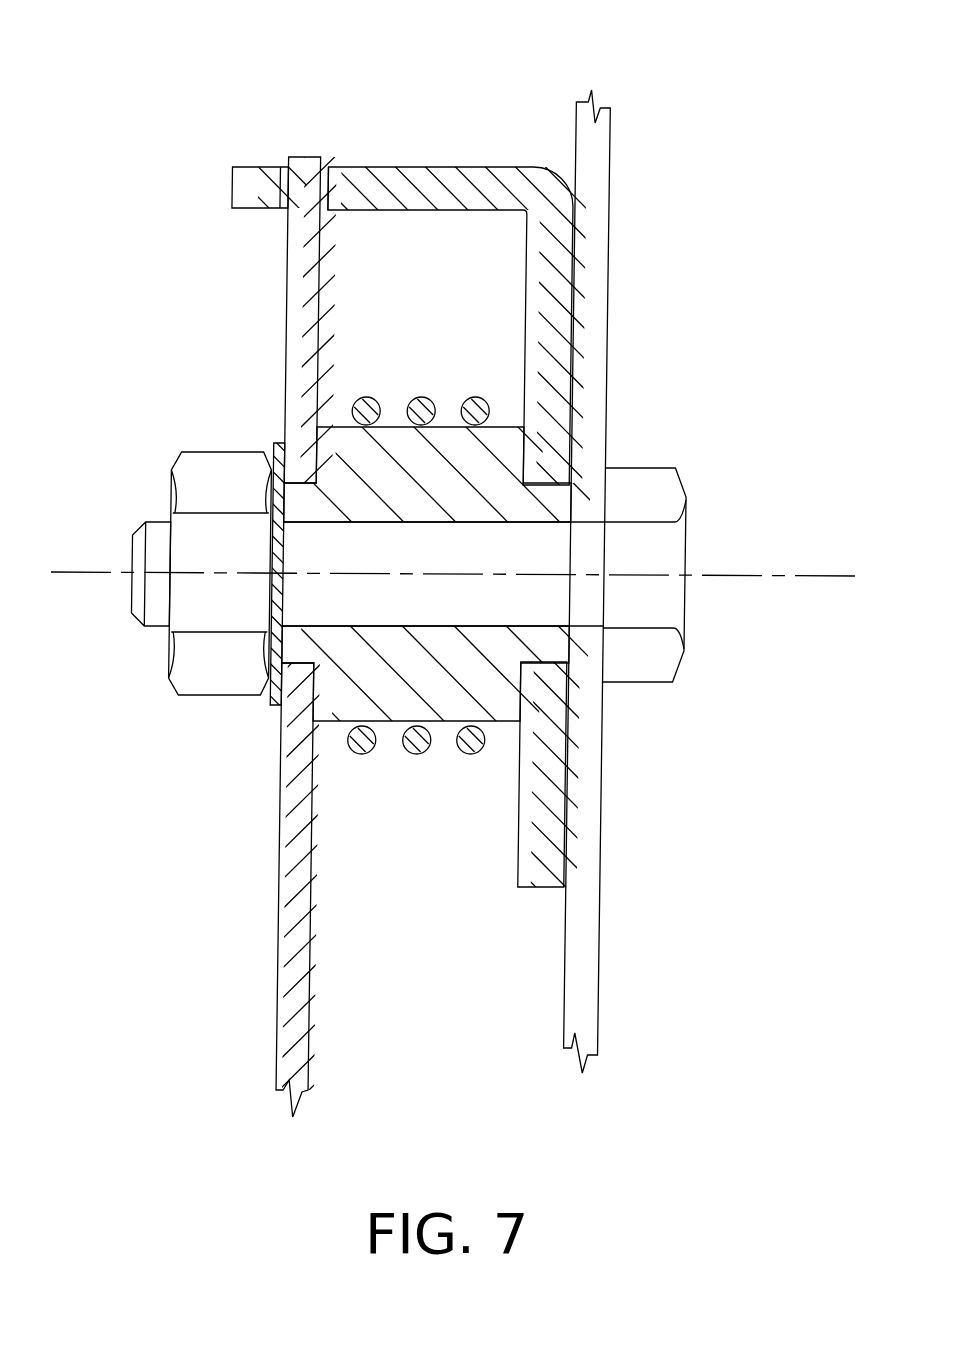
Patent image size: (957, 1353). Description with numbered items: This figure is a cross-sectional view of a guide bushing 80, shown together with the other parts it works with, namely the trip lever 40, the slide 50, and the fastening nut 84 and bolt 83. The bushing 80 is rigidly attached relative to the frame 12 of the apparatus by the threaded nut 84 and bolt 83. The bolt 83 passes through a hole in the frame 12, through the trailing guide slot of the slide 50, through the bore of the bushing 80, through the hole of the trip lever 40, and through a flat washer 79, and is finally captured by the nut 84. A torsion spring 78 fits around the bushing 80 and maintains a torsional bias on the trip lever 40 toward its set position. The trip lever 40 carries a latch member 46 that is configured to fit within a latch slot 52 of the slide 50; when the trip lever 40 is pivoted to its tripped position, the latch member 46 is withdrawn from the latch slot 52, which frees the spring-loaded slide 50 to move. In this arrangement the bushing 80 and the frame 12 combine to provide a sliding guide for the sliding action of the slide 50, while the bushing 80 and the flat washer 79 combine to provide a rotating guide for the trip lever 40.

The frame 12 is at (597, 268).
The trip lever 40 is at (287, 293).
The latch member 46 is at (297, 155).
The slide 50 is at (488, 168).
The latch slot 52 is at (332, 153).
The torsion spring 78 is at (348, 394).
The flat washer 79 is at (265, 702).
The guide bushing 80 is at (343, 703).
The bolt 83 is at (623, 673).
The nut 84 is at (182, 665).